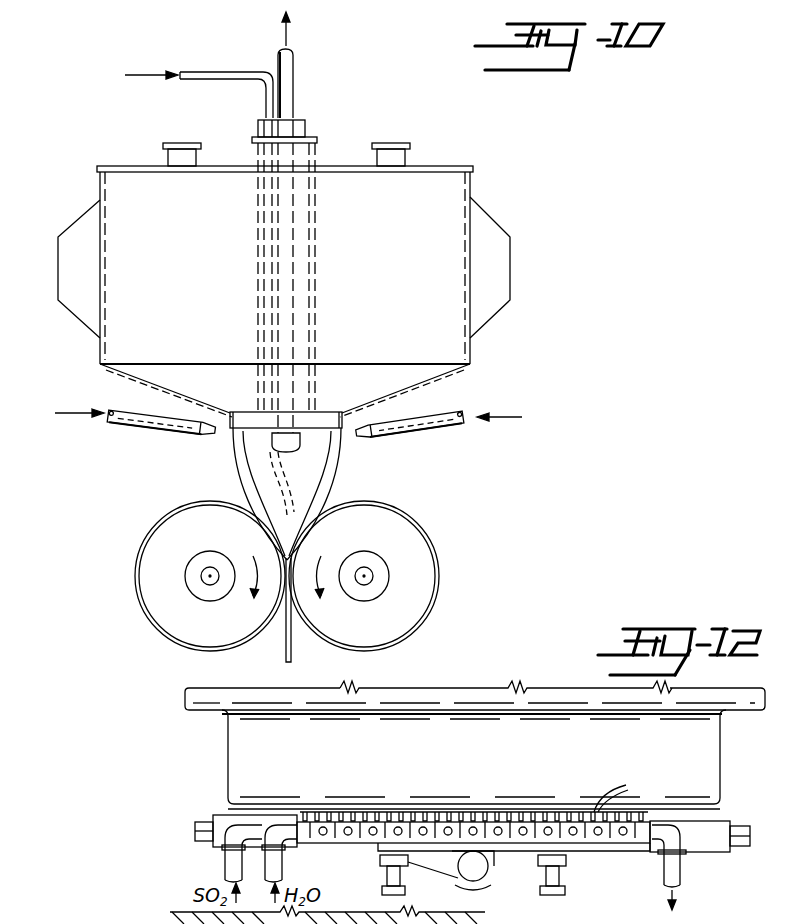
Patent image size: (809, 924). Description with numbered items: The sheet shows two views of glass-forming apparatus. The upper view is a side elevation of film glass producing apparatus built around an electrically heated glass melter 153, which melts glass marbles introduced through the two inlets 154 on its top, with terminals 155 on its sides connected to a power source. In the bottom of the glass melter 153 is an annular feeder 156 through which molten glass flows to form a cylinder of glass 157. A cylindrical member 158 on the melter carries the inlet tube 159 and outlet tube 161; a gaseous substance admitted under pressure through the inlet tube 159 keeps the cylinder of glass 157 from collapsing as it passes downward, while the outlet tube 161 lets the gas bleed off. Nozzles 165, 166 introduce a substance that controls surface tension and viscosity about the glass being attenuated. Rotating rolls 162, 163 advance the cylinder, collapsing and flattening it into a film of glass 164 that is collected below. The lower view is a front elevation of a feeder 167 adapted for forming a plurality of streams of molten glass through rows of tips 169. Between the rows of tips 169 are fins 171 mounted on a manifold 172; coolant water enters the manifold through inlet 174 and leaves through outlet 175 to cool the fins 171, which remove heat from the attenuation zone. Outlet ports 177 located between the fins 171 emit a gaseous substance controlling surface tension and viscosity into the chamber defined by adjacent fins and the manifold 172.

In FIG. 10, the glass melter 153 is at (476, 190).
In FIG. 10, the inlets 154 is at (167, 156).
In FIG. 10, the terminals 155 is at (90, 317).
In FIG. 10, the annular feeder 156 is at (387, 399).
In FIG. 10, the cylinder of glass 157 is at (337, 456).
In FIG. 10, the cylindrical member 158 is at (316, 190).
In FIG. 10, the inlet tube 159 is at (240, 72).
In FIG. 10, the outlet tube 161 is at (292, 76).
In FIG. 10, the rotating roll 162 is at (149, 563).
In FIG. 10, the rotating roll 163 is at (410, 538).
In FIG. 10, the film of glass 164 is at (285, 640).
In FIG. 10, the nozzle 165 is at (150, 430).
In FIG. 10, the nozzle 166 is at (440, 430).
In FIG. 12, the feeder 167 is at (688, 808).
In FIG. 12, the tips 169 is at (635, 793).
In FIG. 12, the fins 171 is at (599, 835).
In FIG. 12, the manifold 172 is at (300, 812).
In FIG. 12, the inlet 174 is at (284, 862).
In FIG. 12, the outlet 175 is at (682, 870).
In FIG. 12, the outlet ports 177 is at (575, 836).